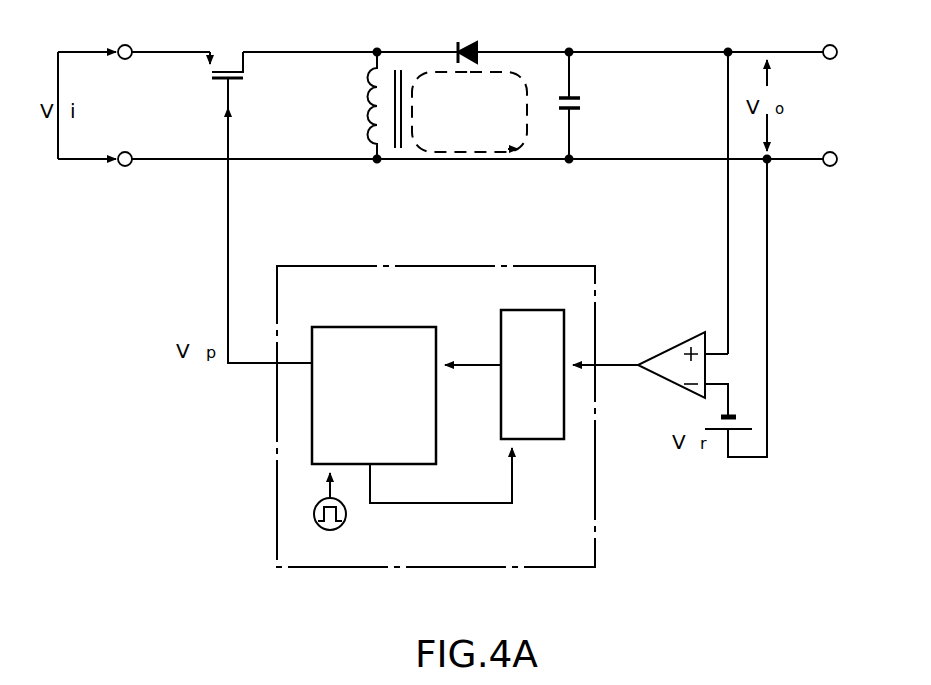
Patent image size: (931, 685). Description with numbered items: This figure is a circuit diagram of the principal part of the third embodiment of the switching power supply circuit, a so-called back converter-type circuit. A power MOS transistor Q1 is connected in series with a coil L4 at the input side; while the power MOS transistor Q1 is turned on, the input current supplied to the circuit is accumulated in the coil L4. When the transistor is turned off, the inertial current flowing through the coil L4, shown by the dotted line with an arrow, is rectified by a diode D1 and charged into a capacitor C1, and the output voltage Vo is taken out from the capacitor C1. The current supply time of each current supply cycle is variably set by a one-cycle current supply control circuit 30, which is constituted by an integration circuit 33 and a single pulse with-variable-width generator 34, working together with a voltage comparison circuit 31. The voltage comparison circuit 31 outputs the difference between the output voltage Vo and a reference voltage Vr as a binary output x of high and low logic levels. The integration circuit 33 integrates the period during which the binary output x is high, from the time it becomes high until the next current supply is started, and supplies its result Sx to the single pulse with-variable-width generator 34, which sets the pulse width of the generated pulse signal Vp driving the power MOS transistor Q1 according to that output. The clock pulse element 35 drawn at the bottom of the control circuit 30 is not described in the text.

The power MOS transistor Q1 is at (261, 190).
The diode D1 is at (470, 37).
The coil L4 is at (357, 105).
The capacitor C1 is at (596, 105).
The one-cycle current supply control circuit 30 is at (545, 258).
The voltage comparison circuit 31 is at (697, 333).
The integration circuit 33 is at (513, 310).
The single pulse with-variable-width generator 34 is at (355, 327).
The clock pulse generator 35 is at (345, 522).